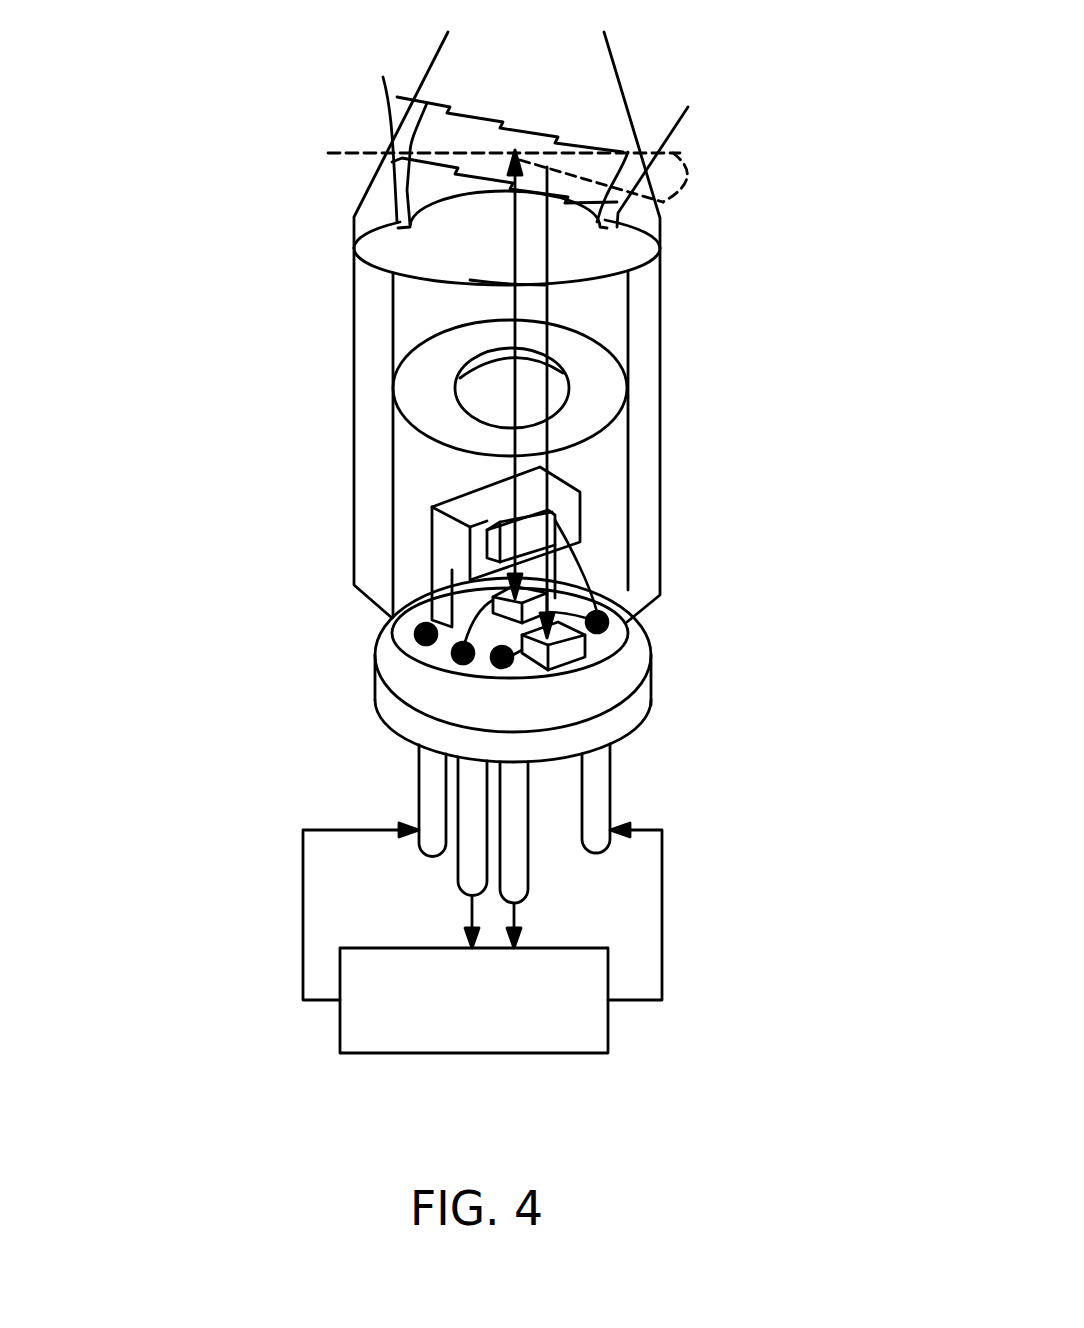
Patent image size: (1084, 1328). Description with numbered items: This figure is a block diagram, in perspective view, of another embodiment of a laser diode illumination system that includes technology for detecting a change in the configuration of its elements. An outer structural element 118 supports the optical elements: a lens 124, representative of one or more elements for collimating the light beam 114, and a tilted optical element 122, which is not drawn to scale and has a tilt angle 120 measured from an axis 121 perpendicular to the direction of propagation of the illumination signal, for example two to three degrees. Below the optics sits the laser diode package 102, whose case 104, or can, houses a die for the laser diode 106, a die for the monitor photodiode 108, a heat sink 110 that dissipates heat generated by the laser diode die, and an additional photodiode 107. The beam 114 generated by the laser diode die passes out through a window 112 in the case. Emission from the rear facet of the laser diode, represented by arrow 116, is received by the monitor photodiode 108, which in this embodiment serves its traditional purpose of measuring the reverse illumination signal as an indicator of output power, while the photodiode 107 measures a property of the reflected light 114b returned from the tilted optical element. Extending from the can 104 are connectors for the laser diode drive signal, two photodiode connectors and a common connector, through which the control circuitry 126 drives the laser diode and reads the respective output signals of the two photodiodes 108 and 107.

The laser diode package 102 is at (702, 352).
The case 104 is at (627, 481).
The laser diode 106 is at (560, 516).
The photodiode 107 is at (572, 652).
The monitor photodiode 108 is at (590, 586).
The heat sink 110 is at (452, 542).
The window 112 is at (495, 384).
The light beam 114 is at (517, 375).
The reflected light 114b is at (547, 267).
The rear facet emission 116 is at (548, 568).
The outer structural element 118 is at (415, 105).
The tilt angle 120 is at (673, 185).
The axis 121 is at (350, 153).
The tilted optical element 122 is at (467, 117).
The lens 124 is at (487, 226).
The control circuitry 126 is at (490, 907).